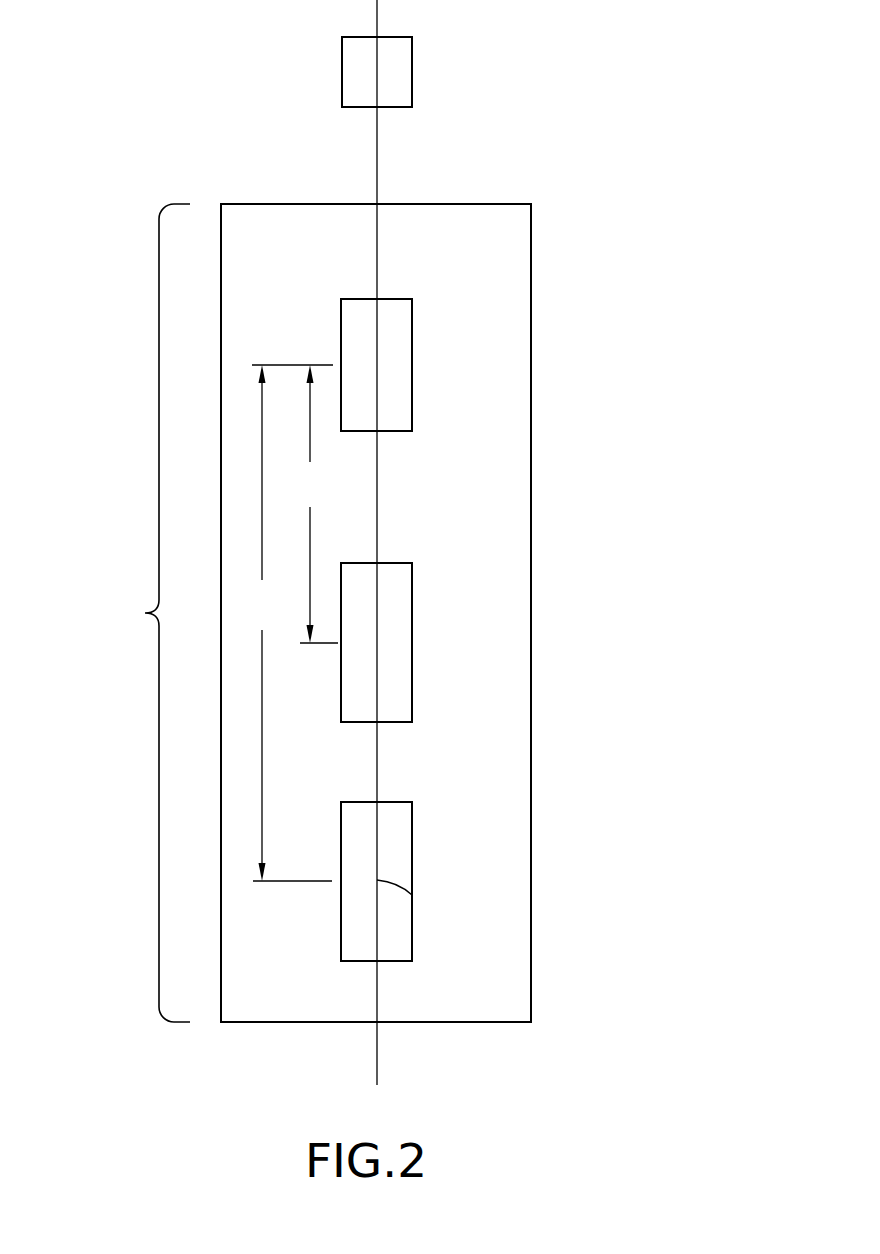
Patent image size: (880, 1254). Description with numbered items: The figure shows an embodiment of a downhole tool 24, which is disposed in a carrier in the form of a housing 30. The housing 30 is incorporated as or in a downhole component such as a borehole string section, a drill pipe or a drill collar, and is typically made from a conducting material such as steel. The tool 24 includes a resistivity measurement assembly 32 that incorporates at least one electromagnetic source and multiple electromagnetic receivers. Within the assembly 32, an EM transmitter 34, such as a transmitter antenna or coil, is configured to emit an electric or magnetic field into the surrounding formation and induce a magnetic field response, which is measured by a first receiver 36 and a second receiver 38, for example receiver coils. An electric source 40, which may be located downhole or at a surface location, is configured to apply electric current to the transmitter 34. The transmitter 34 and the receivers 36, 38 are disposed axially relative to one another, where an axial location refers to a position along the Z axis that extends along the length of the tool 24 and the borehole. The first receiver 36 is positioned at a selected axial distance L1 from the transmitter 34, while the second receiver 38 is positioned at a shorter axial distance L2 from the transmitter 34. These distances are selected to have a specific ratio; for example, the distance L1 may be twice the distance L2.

The downhole tool 24 is at (100, 185).
The housing 30 is at (531, 264).
The resistivity measurement assembly 32 is at (145, 613).
The EM transmitter 34 is at (412, 365).
The first receiver 36 is at (412, 826).
The second receiver 38 is at (412, 641).
The electric source 40 is at (412, 72).
The first axial distance L1 is at (260, 623).
The second axial distance L2 is at (307, 504).
The Z axis Z is at (412, 895).